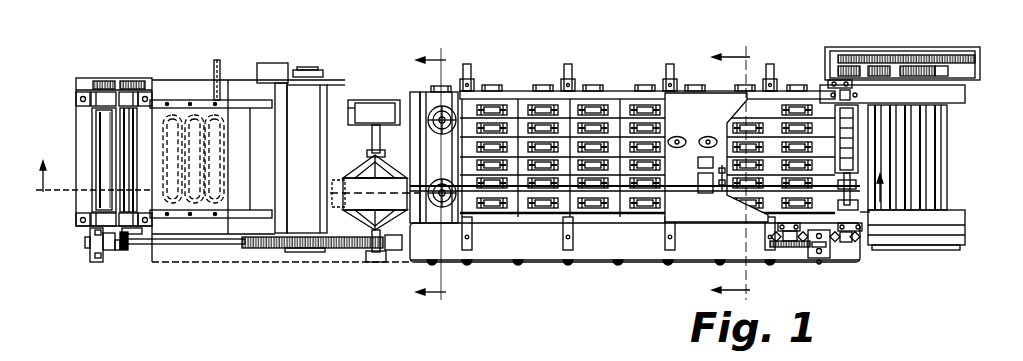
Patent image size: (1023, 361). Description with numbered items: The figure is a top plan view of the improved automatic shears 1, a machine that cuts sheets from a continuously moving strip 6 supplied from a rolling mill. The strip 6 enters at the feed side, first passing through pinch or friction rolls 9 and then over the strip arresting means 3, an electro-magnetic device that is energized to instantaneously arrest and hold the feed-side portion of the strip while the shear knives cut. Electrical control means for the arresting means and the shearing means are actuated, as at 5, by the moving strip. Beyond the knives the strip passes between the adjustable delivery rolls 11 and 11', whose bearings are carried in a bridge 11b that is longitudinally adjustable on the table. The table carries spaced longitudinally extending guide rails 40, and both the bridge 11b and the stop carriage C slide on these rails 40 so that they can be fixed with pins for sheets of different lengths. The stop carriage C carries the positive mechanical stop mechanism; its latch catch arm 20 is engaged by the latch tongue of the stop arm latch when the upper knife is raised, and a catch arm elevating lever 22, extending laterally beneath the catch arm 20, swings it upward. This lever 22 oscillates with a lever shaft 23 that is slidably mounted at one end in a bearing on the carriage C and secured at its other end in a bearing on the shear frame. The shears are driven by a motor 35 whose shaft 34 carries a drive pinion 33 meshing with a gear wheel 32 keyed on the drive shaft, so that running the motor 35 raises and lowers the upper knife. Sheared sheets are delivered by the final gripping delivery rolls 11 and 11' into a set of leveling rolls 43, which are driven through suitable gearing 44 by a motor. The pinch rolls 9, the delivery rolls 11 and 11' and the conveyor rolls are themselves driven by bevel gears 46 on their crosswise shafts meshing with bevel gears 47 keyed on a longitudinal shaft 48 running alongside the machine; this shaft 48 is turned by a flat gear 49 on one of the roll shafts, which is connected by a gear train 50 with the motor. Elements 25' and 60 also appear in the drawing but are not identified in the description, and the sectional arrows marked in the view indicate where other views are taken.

The improved automatic shears 1 is at (556, 270).
The strip arresting means 3 is at (90, 186).
The actuation point of the control means 5 is at (649, 178).
The moving strip 6 is at (735, 174).
The pinch or friction roll 9 is at (92, 144).
The adjustable delivery roll 11 is at (828, 136).
The bridge 11b is at (434, 154).
The adjustable delivery roll 11' is at (883, 241).
The latch catch arm 20 is at (722, 168).
The catch arm elevating lever 22 is at (720, 193).
The lever shaft 23 is at (683, 195).
The lug 25' is at (694, 161).
The gear wheel 32 is at (272, 249).
The drive pinion 33 is at (368, 258).
The motor shaft 34 is at (383, 258).
The motor 35 is at (375, 192).
The guide rails 40 is at (512, 98).
The leveling rolls 43 is at (948, 172).
The gearing 44 is at (935, 52).
The bevel gears 46 is at (133, 250).
The bevel gears 47 is at (118, 250).
The longitudinal shaft 48 is at (202, 245).
The flat gear 49 is at (836, 62).
The gear train 50 is at (890, 55).
The box 60 is at (366, 108).
The stop carriage C is at (716, 157).